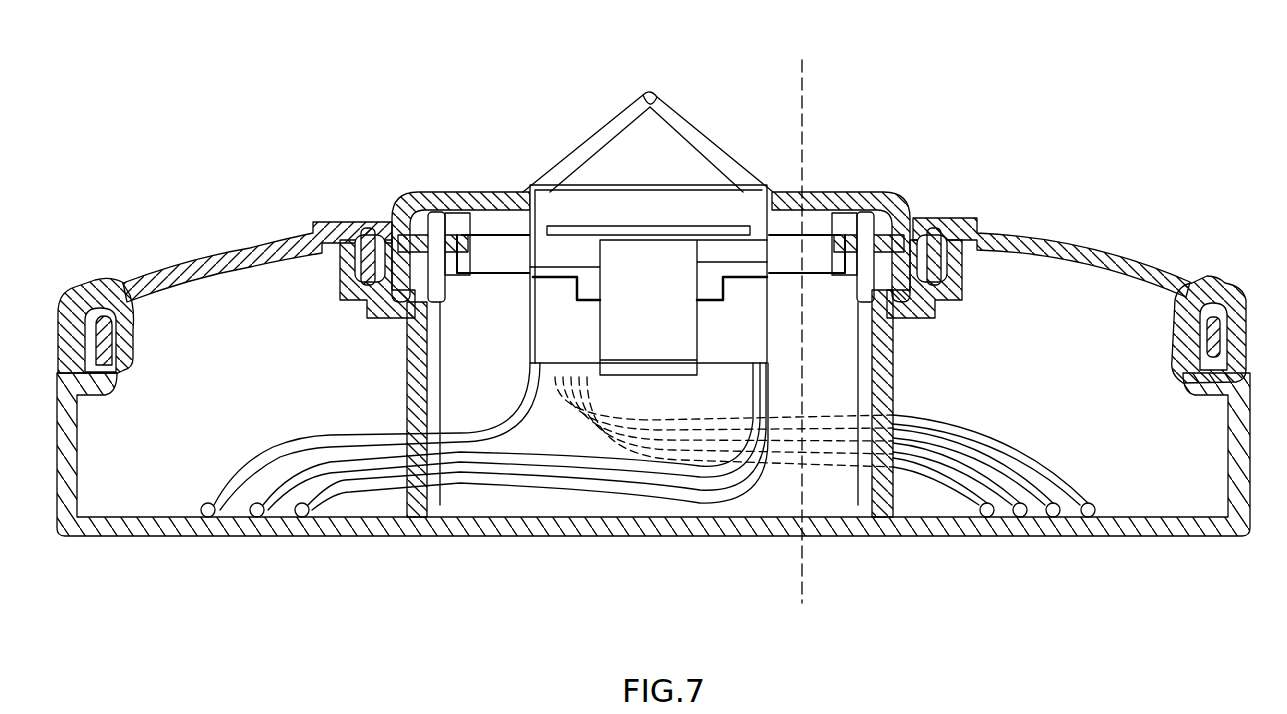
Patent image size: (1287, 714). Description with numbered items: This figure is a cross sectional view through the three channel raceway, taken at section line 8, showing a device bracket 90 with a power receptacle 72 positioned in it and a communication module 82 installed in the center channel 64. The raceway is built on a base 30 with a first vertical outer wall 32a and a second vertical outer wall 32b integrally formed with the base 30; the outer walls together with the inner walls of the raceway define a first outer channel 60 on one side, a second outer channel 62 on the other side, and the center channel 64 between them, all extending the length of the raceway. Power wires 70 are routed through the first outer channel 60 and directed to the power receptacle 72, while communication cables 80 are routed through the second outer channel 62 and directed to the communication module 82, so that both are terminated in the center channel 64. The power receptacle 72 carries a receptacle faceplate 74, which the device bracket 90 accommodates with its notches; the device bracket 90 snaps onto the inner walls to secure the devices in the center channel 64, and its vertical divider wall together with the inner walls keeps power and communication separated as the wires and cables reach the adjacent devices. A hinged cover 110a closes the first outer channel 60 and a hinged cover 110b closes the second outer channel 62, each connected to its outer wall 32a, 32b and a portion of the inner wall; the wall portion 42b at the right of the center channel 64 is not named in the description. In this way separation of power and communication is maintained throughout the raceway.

The section line 8- 8 is at (802, 60).
The base 30 is at (492, 537).
The first vertical outer wall 32a is at (60, 483).
The second vertical outer wall 32b is at (1240, 467).
The right housing wall 42b is at (885, 493).
The first outer channel 60 is at (172, 483).
The second outer channel 62 is at (1137, 487).
The center channel 64 is at (755, 495).
The power wires 70 is at (220, 500).
The power receptacle 72 is at (580, 193).
The receptacle faceplate 74 is at (840, 193).
The communication cables 80 is at (1087, 513).
The communication module 82 is at (667, 103).
The device bracket 90 is at (905, 212).
The hinged cover 110a is at (227, 250).
The hinged cover 110b is at (1063, 240).